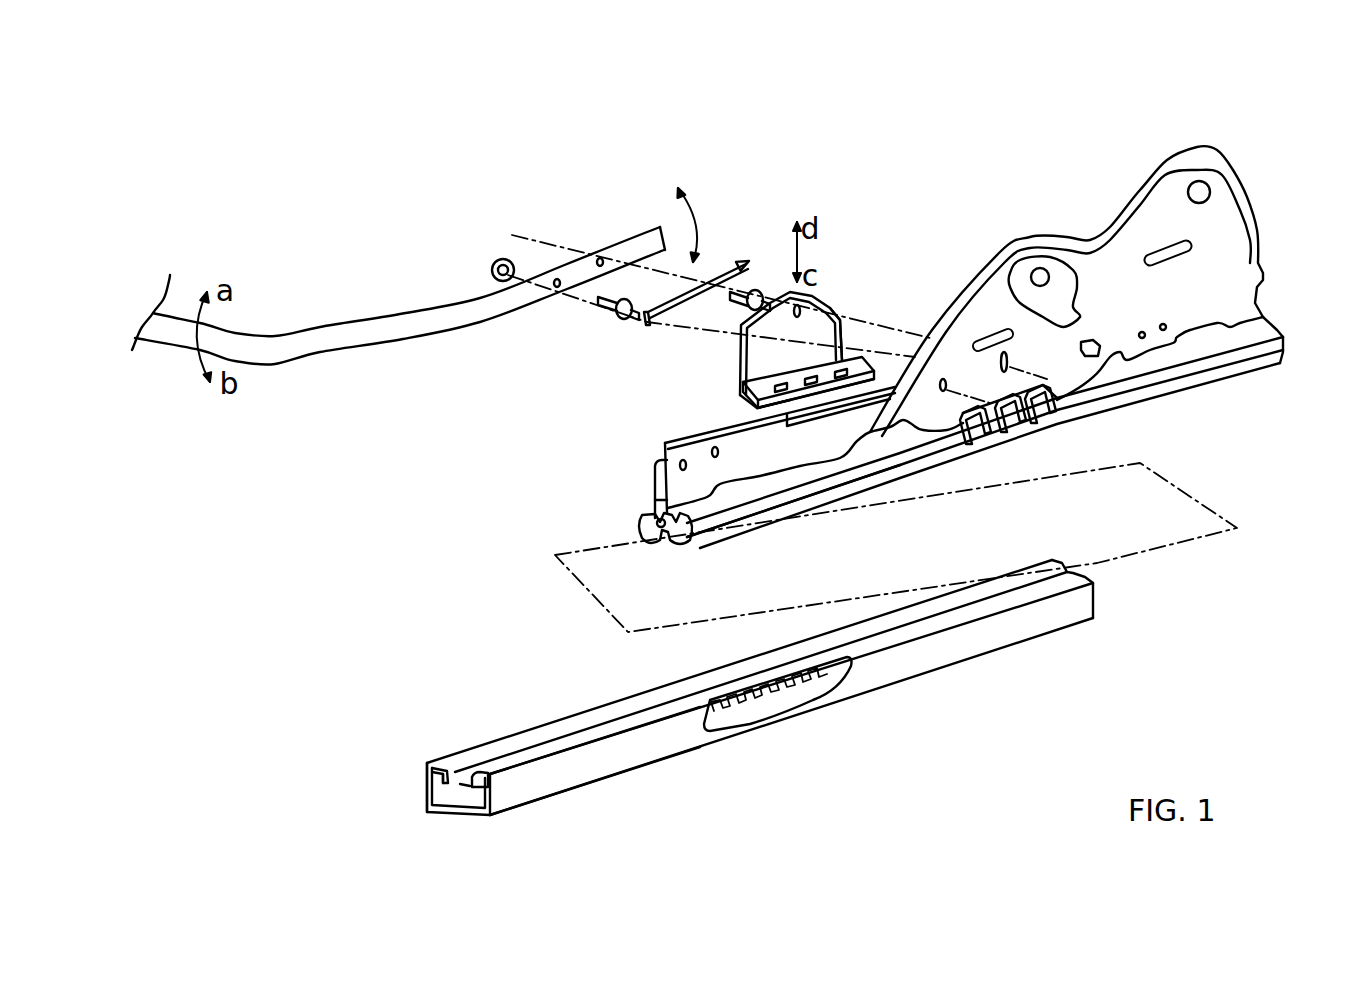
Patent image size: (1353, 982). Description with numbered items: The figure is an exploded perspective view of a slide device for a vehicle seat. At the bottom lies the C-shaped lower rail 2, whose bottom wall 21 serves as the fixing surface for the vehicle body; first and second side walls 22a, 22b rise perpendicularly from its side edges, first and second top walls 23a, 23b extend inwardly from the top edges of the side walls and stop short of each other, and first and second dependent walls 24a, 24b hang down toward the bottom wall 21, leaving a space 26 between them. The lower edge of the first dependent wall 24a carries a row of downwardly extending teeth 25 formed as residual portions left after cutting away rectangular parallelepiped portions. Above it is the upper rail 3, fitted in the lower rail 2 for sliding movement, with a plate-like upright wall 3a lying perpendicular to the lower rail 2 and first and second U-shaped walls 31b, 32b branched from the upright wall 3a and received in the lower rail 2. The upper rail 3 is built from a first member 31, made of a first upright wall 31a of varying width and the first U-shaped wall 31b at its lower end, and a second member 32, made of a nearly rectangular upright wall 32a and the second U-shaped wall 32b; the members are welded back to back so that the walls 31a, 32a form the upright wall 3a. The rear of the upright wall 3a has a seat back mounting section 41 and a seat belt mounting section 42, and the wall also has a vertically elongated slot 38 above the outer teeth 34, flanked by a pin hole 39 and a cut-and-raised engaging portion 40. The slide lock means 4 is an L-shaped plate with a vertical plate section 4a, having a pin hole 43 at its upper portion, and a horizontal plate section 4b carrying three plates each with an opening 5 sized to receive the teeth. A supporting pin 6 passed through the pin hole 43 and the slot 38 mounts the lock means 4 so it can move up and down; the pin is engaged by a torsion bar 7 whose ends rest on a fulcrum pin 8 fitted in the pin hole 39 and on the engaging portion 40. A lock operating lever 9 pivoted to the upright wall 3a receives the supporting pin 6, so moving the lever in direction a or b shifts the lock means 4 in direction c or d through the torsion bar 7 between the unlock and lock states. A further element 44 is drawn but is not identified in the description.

The lower rail 2 is at (1097, 607).
The upper rail 3 is at (1195, 393).
The upright wall 3a is at (1218, 208).
The slide lock means 4 is at (822, 300).
The vertical plate section 4a is at (837, 323).
The horizontal plate section 4b is at (787, 378).
The opening 5 is at (745, 386).
The supporting pin 6 is at (757, 286).
The torsion bar 7 is at (738, 260).
The fulcrum pin 8 is at (590, 313).
The lock operating lever 9 is at (362, 328).
The bottom wall 21 is at (457, 813).
The first side wall 22a is at (513, 790).
The second side wall 22b is at (437, 793).
The first top wall 23a is at (540, 757).
The second top wall 23b is at (440, 758).
The first dependent wall 24a is at (480, 773).
The second dependent wall 24b is at (457, 773).
The teeth 25 is at (723, 710).
The space 26 is at (467, 780).
The first member 31 is at (677, 490).
The first upright wall 31a is at (750, 455).
The first U-shaped wall 31b is at (840, 477).
The second member 32 is at (640, 465).
The upright wall 32a is at (657, 498).
The second U-shaped wall 32b is at (643, 527).
The outer teeth 34 is at (1013, 430).
The slot 38 is at (1000, 357).
The pin hole 39 is at (943, 393).
The engaging portion 40 is at (1090, 345).
The seat back mounting section 41 is at (1180, 180).
The seat belt mounting section 42 is at (1058, 270).
The pin hole 43 is at (790, 311).
The flange edge 44 is at (770, 400).